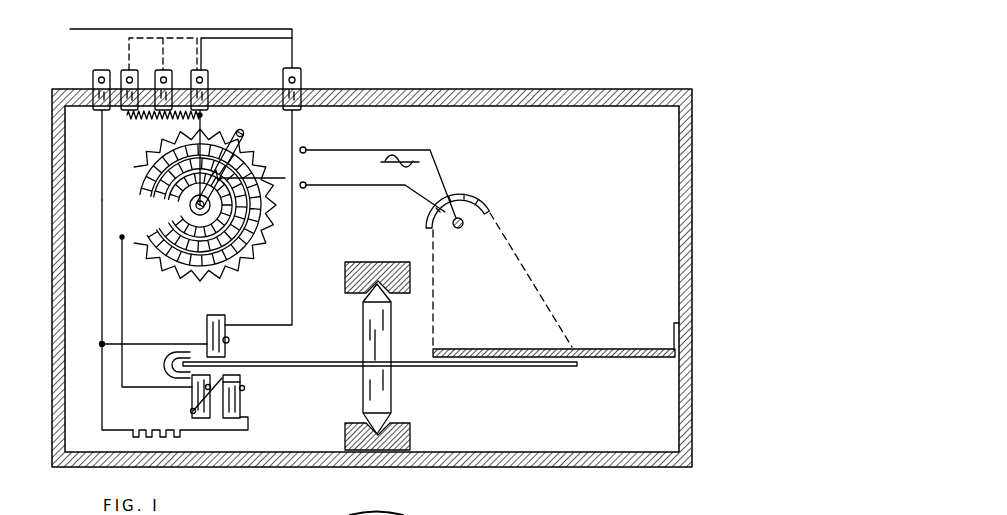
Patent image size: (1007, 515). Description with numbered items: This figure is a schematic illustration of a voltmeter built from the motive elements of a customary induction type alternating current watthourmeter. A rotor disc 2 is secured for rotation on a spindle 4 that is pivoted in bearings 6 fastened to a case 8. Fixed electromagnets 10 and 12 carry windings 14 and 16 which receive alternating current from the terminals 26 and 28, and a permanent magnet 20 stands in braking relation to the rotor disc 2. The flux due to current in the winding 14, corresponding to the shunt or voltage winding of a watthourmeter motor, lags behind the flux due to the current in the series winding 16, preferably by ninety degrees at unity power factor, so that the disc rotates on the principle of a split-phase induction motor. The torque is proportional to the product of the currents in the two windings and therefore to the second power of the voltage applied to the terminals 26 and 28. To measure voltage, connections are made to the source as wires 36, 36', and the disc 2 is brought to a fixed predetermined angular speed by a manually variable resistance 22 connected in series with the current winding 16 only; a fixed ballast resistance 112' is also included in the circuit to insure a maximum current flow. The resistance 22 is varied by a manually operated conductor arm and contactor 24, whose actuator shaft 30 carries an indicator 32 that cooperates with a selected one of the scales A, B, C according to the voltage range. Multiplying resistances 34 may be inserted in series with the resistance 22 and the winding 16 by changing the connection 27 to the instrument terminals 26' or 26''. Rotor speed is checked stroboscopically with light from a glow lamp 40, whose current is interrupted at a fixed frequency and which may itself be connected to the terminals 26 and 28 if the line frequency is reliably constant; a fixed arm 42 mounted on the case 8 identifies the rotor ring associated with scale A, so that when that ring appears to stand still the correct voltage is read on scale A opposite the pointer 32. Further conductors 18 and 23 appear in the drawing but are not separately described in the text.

The rotor disc 2 is at (317, 361).
The spindle 4 is at (394, 383).
The bearings 6 is at (357, 258).
The case 8 is at (677, 397).
The electromagnet 10 is at (228, 350).
The electromagnet 12 is at (240, 380).
The winding 14 is at (207, 330).
The winding 16 is at (245, 388).
The conductor 18 is at (102, 284).
The permanent magnet 20 is at (163, 364).
The variable resistance 22 is at (232, 278).
The conductor 23 is at (122, 320).
The conductor arm and contactor 24 is at (244, 133).
The terminal 26 is at (276, 89).
The instrument terminal 26' is at (172, 80).
The instrument terminal 26'' is at (139, 81).
The connection 27 is at (250, 40).
The terminal 28 is at (93, 113).
The actuator shaft 30 is at (202, 216).
The indicator 32 is at (285, 178).
The multiplying resistances 34 is at (180, 124).
The wire 36 is at (164, 43).
The wire 36' is at (80, 79).
The glow lamp 40 is at (481, 186).
The fixed arm 42 is at (607, 348).
The ballast resistance 112' is at (190, 422).